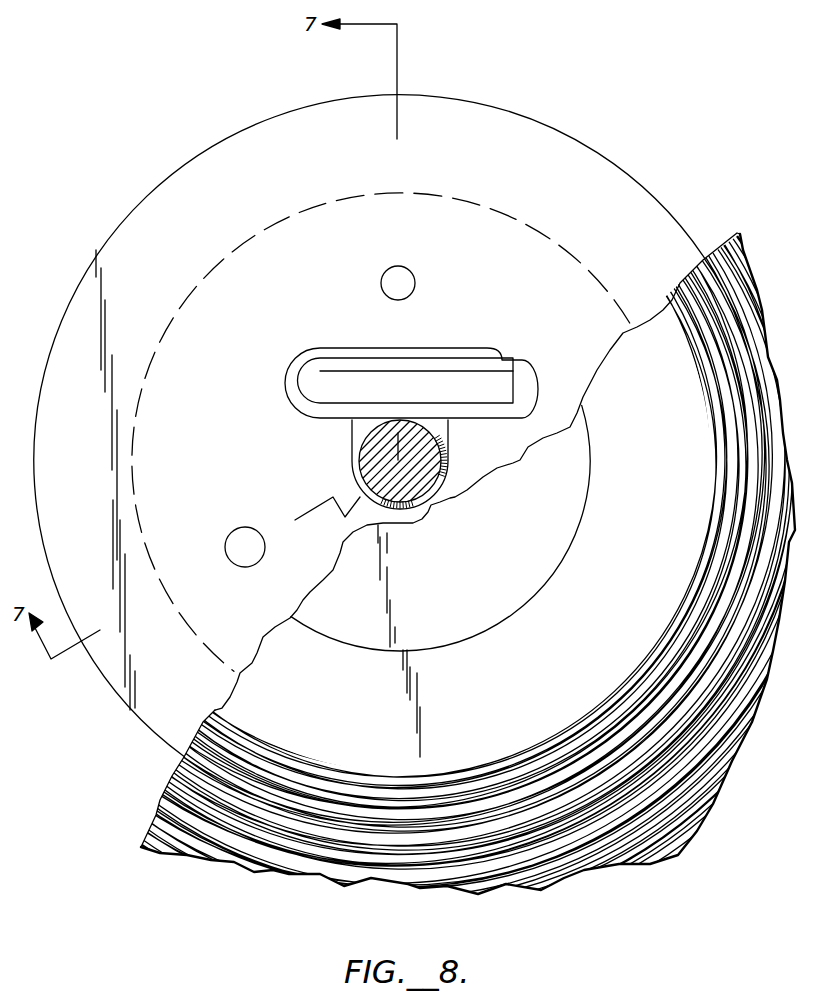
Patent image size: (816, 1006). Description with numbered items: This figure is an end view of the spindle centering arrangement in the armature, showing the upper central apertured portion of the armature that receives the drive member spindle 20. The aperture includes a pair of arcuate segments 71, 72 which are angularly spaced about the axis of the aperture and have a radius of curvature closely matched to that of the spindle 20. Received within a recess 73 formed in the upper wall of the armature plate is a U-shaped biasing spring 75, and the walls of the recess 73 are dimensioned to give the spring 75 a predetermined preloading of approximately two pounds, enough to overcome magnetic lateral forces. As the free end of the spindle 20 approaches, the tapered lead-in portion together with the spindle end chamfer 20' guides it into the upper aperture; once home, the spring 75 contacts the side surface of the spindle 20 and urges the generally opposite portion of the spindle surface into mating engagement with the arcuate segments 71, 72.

The drive member spindle 20 is at (358, 461).
The spindle end chamfer 20' is at (446, 469).
The arcuate segment 71 is at (366, 503).
The arcuate segment 72 is at (431, 505).
The recess 73 is at (460, 385).
The U-shaped biasing spring 75 is at (410, 360).